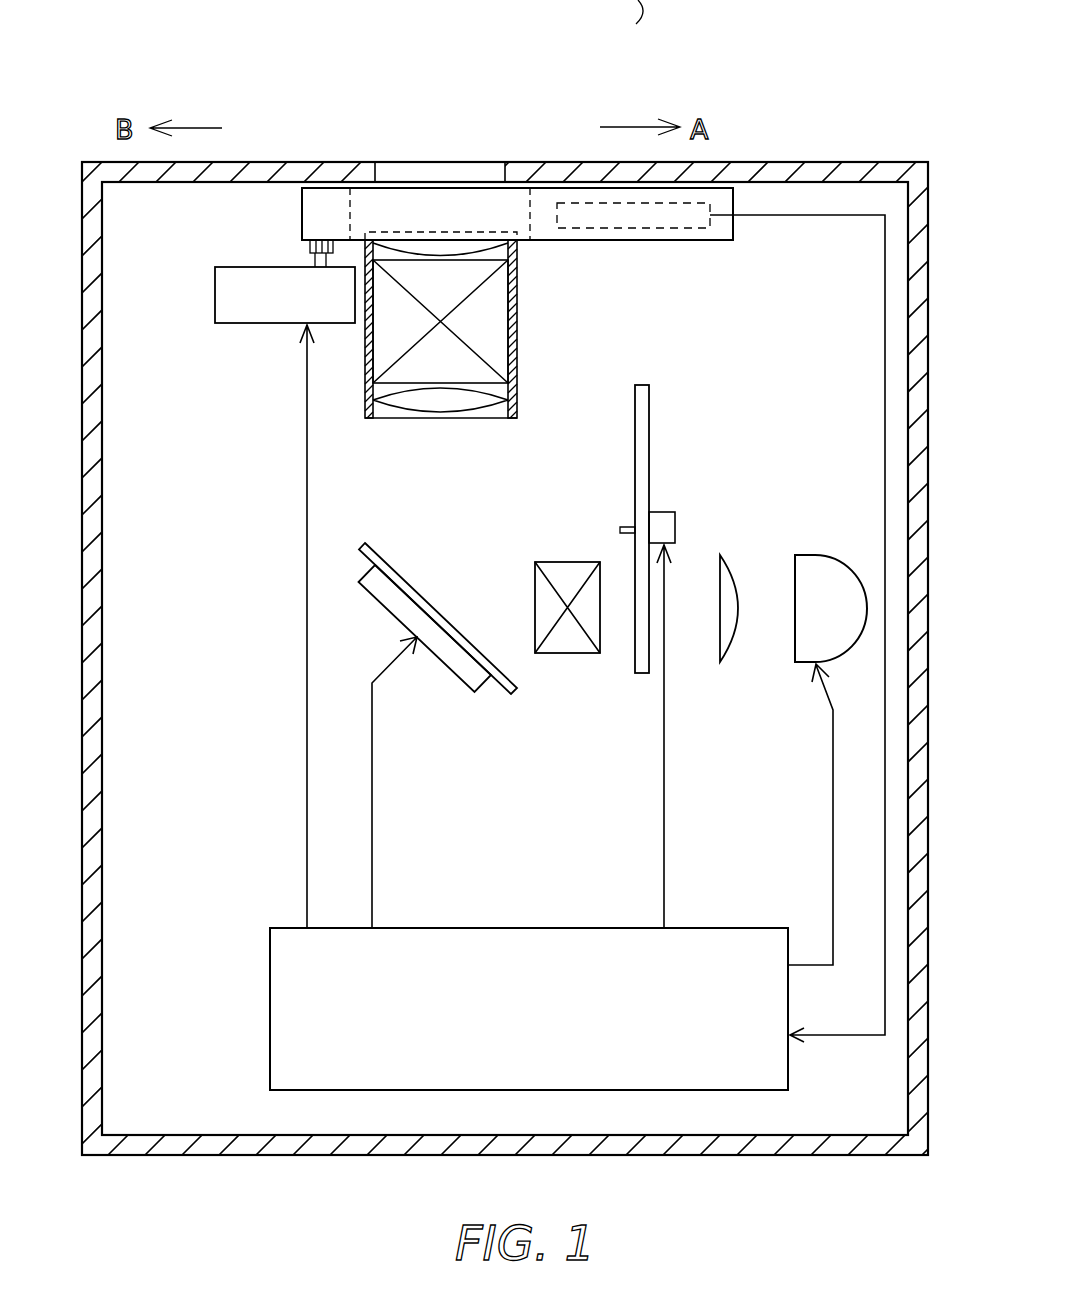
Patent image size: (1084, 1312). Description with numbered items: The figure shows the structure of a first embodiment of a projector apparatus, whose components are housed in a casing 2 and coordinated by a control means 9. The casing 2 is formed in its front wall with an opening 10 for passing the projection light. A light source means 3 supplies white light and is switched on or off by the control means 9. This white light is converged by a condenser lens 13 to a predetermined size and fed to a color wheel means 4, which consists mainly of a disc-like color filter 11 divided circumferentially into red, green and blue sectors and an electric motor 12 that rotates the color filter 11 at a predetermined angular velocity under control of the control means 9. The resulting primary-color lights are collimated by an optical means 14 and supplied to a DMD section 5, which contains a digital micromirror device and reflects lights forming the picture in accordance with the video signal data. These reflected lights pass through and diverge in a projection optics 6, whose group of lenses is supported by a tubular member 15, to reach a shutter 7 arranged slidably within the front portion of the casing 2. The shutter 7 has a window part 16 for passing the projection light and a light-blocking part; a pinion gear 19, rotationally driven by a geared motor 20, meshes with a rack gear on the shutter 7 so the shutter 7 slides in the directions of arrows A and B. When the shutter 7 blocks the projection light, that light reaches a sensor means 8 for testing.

The casing 2 is at (828, 161).
The light source means 3 is at (836, 619).
The color wheel means 4 is at (668, 437).
The DMD section 5 is at (455, 672).
The projection optics 6 is at (517, 296).
The shutter 7 is at (302, 213).
The sensor means 8 is at (662, 230).
The control means 9 is at (270, 998).
The opening 10 is at (490, 173).
The color filter 11 is at (645, 406).
The electric motor 12 is at (665, 517).
The condenser lens 13 is at (728, 648).
The optical means 14 is at (568, 655).
The tubular member 15 is at (517, 388).
The window part 16 is at (373, 211).
The pinion gear 19 is at (310, 247).
The geared motor 20 is at (308, 311).